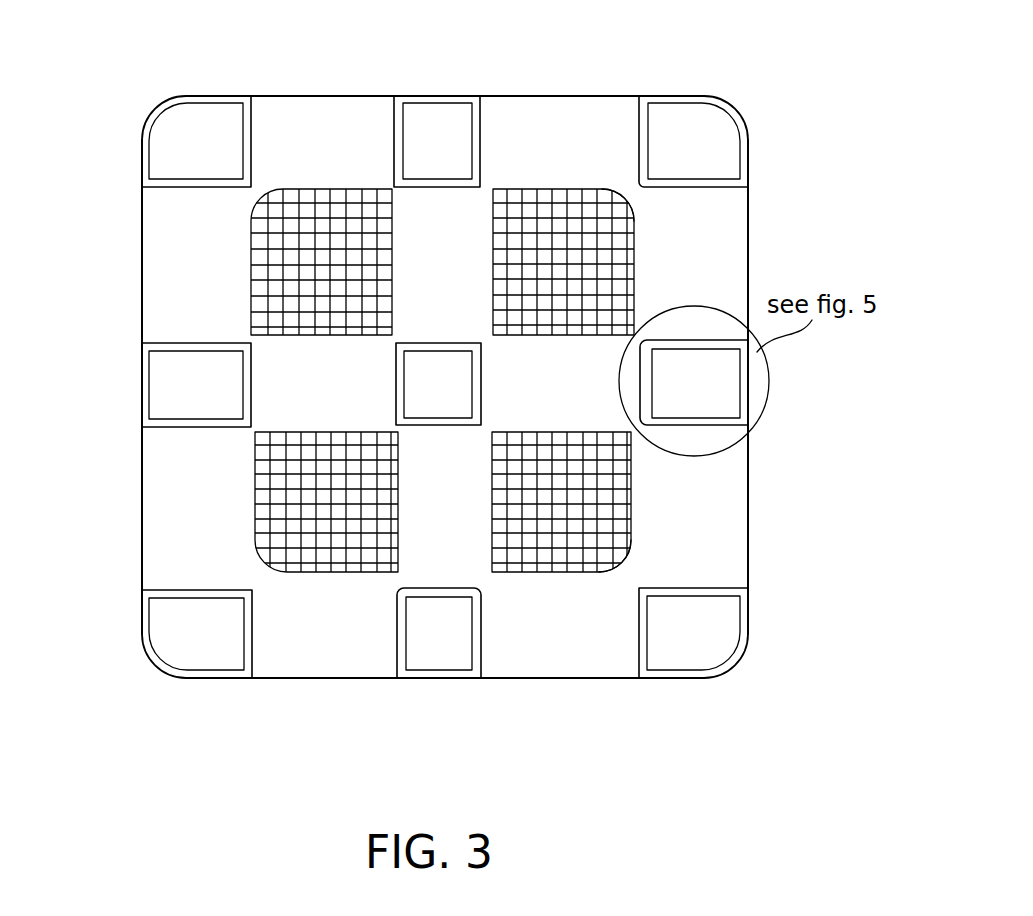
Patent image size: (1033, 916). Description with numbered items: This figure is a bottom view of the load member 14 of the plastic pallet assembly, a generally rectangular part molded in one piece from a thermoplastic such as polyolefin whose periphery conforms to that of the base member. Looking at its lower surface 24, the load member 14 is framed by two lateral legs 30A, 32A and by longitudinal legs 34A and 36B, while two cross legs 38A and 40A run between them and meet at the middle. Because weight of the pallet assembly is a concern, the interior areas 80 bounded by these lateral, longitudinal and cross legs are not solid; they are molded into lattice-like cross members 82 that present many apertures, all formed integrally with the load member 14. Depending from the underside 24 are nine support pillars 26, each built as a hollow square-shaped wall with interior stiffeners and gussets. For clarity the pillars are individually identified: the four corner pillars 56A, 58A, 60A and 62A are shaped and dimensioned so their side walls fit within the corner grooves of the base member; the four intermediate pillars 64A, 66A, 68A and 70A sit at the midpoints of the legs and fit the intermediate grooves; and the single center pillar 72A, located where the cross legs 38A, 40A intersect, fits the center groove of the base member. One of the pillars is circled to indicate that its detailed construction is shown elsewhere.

The load member 14 is at (134, 106).
The lower surface 24 is at (420, 284).
The support pillars 26 is at (179, 158).
The lateral leg 30A is at (348, 123).
The lateral leg 32A is at (323, 678).
The longitudinal leg 34A is at (152, 288).
The right side edge 36B is at (725, 252).
The cross leg 38A is at (292, 407).
The cross leg 40A is at (462, 213).
The corner pillar 56A is at (208, 96).
The corner pillar 58A is at (717, 96).
The corner pillar 60A is at (695, 678).
The corner pillar 62A is at (163, 668).
The intermediate pillar 64A is at (438, 96).
The intermediate pillar 66A is at (743, 402).
The intermediate pillar 68A is at (440, 670).
The intermediate pillar 70A is at (142, 382).
The center pillar 72A is at (477, 385).
The interior areas 80 is at (267, 257).
The lattice-like cross members 82 is at (588, 208).